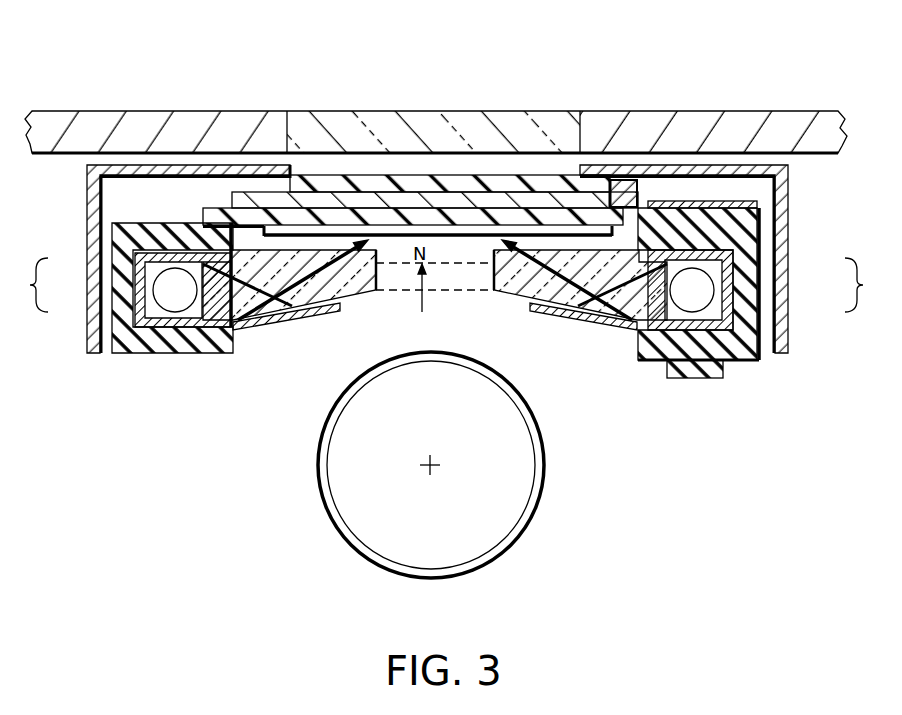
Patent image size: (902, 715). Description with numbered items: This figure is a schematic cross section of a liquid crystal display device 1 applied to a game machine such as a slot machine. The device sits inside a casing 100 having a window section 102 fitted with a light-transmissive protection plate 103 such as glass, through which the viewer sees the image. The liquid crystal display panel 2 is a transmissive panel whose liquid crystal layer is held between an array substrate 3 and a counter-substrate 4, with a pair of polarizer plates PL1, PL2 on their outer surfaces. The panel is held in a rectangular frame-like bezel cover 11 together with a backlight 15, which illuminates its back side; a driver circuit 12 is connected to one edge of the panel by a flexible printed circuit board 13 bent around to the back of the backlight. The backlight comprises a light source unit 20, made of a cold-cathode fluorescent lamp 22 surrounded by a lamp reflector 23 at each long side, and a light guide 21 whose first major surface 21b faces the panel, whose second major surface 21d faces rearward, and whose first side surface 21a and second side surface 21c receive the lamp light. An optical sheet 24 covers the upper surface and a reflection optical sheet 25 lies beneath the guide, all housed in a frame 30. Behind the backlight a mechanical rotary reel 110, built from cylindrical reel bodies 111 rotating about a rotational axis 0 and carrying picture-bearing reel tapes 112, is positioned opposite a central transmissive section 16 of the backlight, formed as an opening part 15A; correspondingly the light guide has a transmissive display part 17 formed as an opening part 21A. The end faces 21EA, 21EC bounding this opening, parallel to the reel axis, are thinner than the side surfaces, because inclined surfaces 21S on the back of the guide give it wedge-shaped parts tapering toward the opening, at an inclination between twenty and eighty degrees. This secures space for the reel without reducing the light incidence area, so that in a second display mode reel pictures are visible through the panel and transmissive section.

The liquid crystal display device 1 is at (737, 440).
The liquid crystal display panel 2 is at (189, 197).
The array substrate 3 is at (193, 200).
The counter-substrate 4 is at (265, 195).
The bezel cover 11 is at (87, 187).
The driver circuit 12 is at (723, 378).
The flexible printed circuit board 13 is at (760, 360).
The backlight 15 is at (266, 345).
The opening part 15A is at (478, 268).
The transmissive section 16 is at (402, 304).
The transmissive display part 17 is at (447, 322).
The light source unit 20 is at (446, 285).
The light guide 21 is at (258, 287).
The opening part 21A is at (455, 292).
The first side surface 21a is at (735, 313).
The first major surface 21b is at (562, 250).
The second side surface 21c is at (143, 312).
The second major surface 21d is at (520, 287).
The end face 21EA is at (435, 225).
The end face 21EC is at (412, 280).
The inclined surface 21S is at (327, 305).
The cold-cathode fluorescent lamp 22 is at (163, 292).
The lamp reflector 23 is at (143, 262).
The optical sheet 24 is at (224, 200).
The optical sheet 25 is at (282, 330).
The frame 30 is at (122, 223).
The casing 100 is at (797, 111).
The window section 102 is at (290, 130).
The protection plate 103 is at (556, 150).
The rotary reel 110 is at (568, 497).
The reel body 111 is at (458, 549).
The reel tape 112 is at (522, 525).
The rotational axis 0 is at (430, 465).
The polarizer plate PL1 is at (359, 222).
The polarizer plate PL2 is at (272, 183).